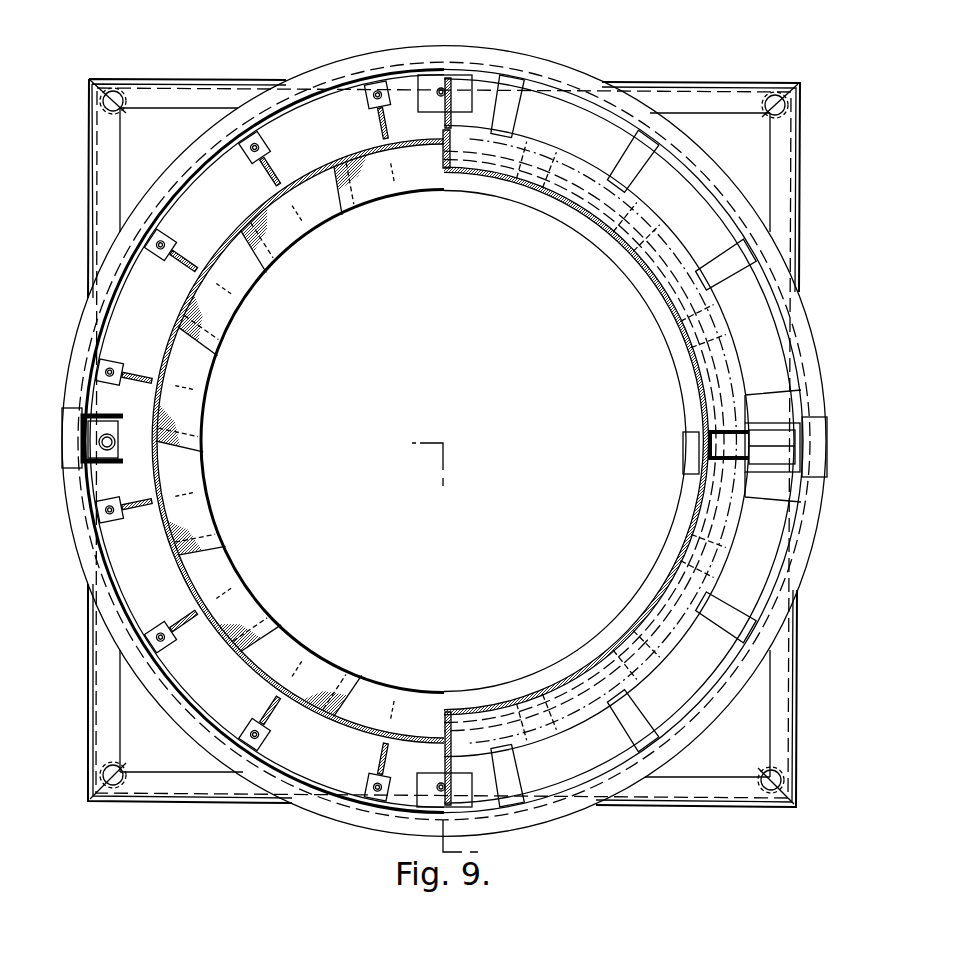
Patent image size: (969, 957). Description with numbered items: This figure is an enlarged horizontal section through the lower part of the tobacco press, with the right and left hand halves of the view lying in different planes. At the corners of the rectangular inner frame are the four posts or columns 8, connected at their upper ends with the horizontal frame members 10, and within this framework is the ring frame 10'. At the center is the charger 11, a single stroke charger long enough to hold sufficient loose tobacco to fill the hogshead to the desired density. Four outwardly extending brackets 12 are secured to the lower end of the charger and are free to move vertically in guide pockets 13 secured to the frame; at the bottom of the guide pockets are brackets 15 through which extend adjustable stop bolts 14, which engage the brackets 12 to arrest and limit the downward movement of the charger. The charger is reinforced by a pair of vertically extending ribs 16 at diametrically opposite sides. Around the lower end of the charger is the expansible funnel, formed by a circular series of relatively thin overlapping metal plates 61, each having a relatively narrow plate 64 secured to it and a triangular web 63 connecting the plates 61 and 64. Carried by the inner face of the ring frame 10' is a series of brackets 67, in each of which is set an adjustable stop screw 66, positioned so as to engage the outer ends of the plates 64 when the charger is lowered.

The posts or columns 8 is at (127, 106).
The horizontal frame members 10 is at (440, 467).
The ring frame 10' is at (366, 493).
The charger 11 is at (700, 472).
The brackets 12 is at (454, 113).
The guide pockets 13 is at (103, 416).
The adjustable stop bolts 14 is at (440, 95).
The brackets 15 is at (118, 434).
The vertically extending ribs 16 is at (740, 431).
The overlapping metal plates 61 is at (289, 241).
The triangular web 63 is at (198, 262).
The relatively narrow plate 64 is at (632, 149).
The adjustable stop screw 66 is at (366, 104).
The brackets 67 is at (114, 361).